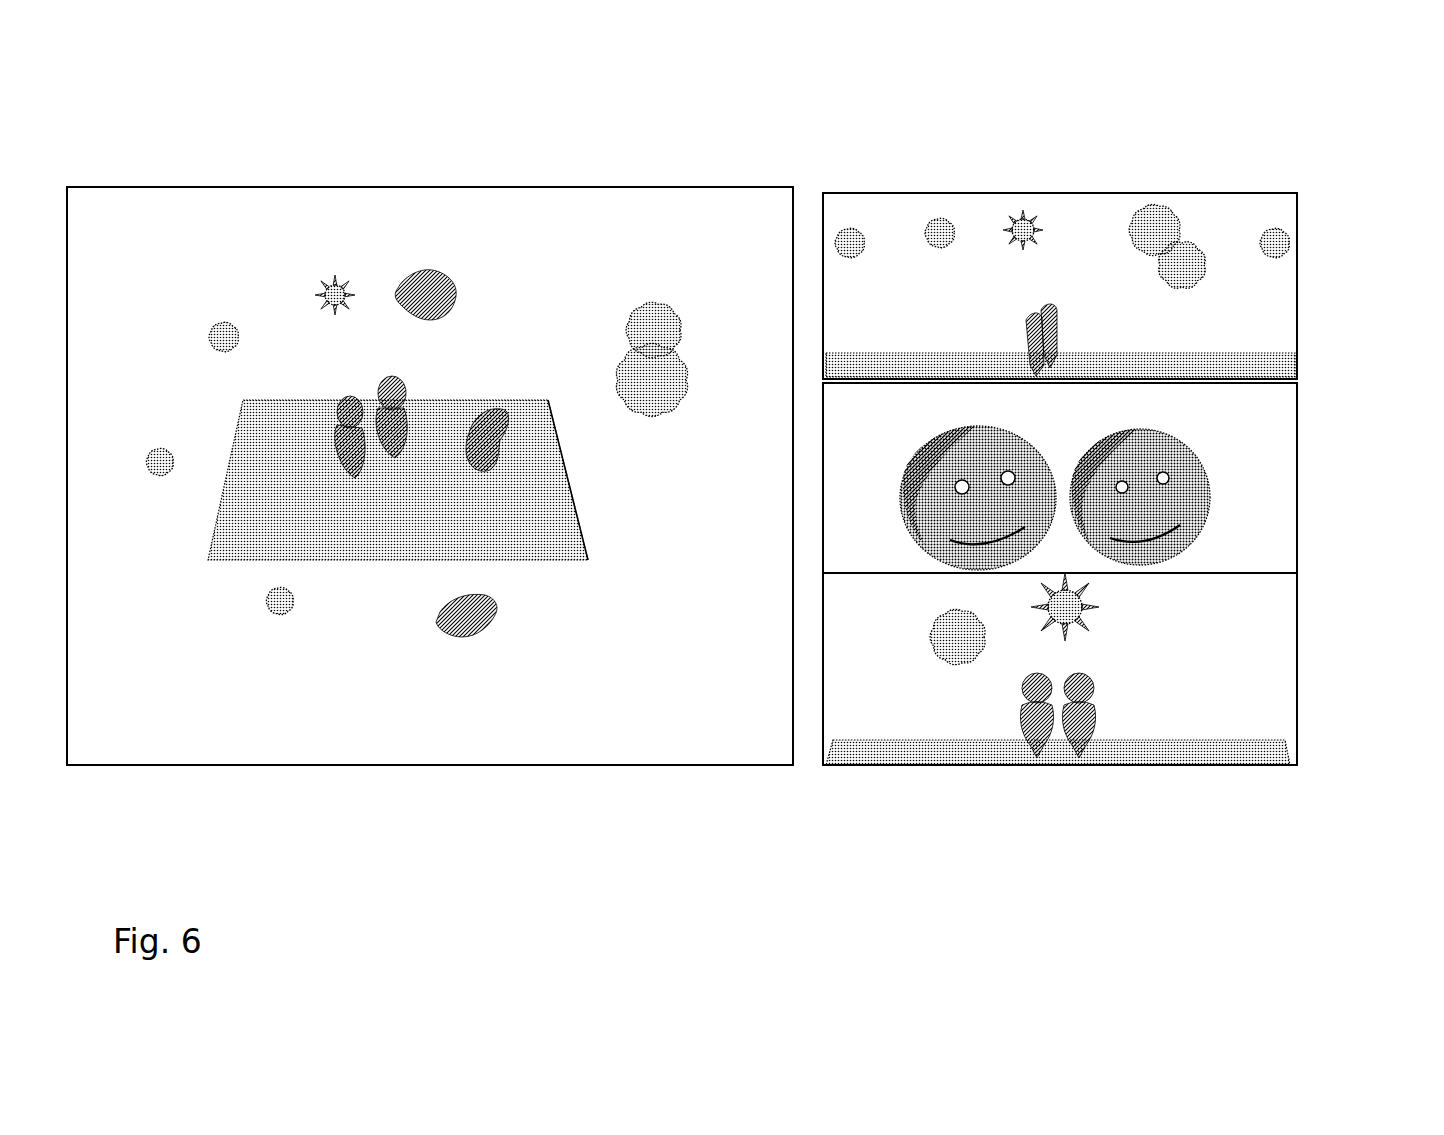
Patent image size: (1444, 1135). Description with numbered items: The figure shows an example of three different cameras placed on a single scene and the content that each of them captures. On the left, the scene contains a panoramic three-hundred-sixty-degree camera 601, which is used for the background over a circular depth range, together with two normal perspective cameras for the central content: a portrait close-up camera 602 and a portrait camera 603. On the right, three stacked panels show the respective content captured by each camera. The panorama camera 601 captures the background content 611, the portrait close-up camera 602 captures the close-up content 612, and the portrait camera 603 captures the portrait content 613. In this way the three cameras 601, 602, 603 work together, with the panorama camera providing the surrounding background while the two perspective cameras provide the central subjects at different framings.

The panorama 360-camera 601 is at (420, 265).
The portrait close-up camera 602 is at (505, 440).
The portrait camera 603 is at (442, 637).
The content captured by the panorama 360-camera 611 is at (1089, 200).
The content captured by the portrait close-up camera 612 is at (1297, 440).
The content captured by the portrait camera 613 is at (1297, 637).